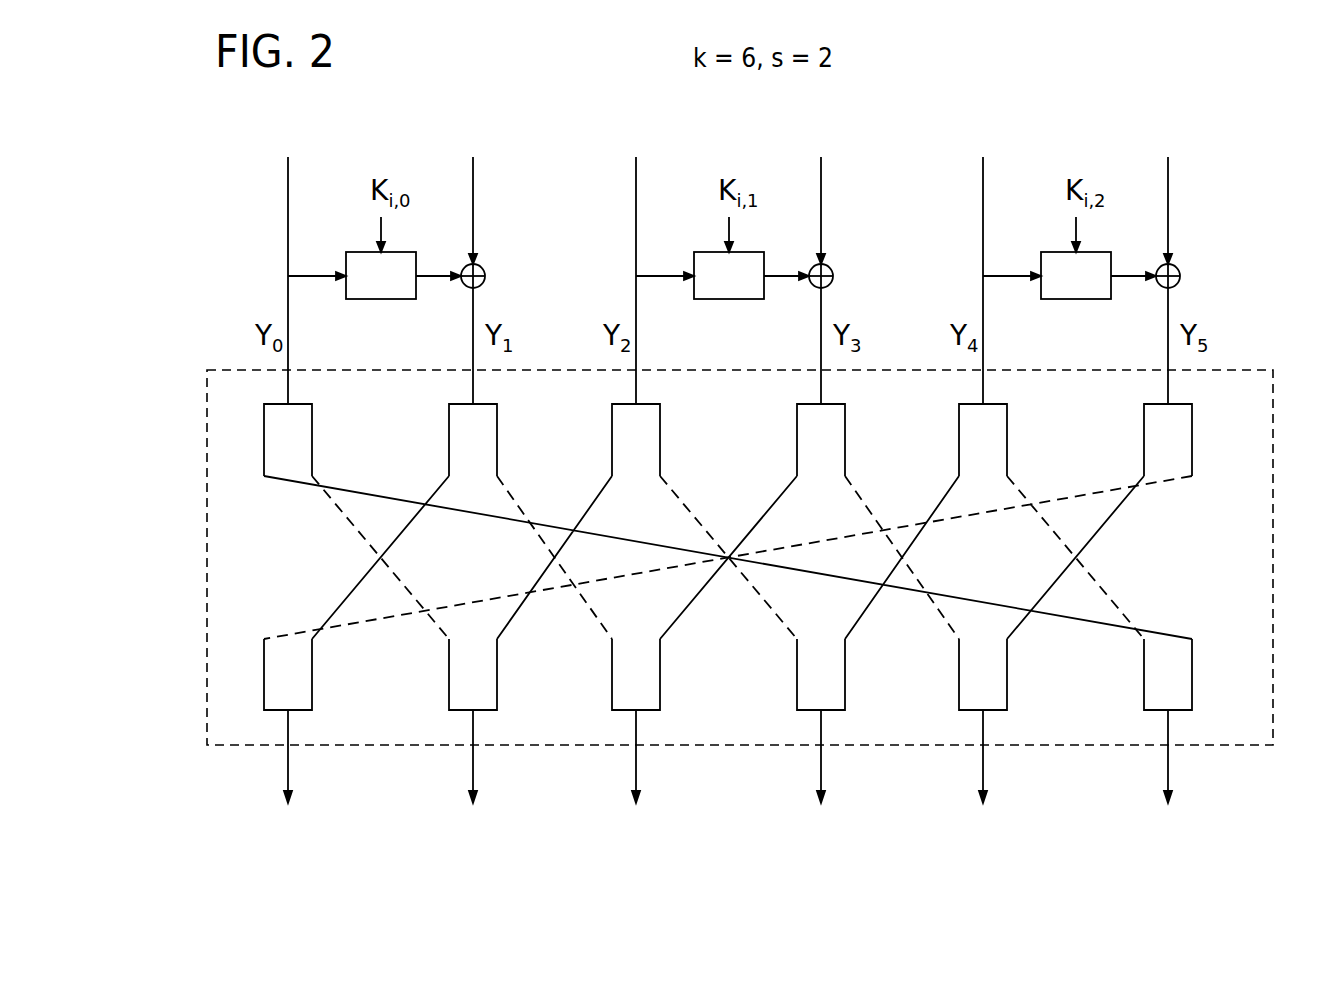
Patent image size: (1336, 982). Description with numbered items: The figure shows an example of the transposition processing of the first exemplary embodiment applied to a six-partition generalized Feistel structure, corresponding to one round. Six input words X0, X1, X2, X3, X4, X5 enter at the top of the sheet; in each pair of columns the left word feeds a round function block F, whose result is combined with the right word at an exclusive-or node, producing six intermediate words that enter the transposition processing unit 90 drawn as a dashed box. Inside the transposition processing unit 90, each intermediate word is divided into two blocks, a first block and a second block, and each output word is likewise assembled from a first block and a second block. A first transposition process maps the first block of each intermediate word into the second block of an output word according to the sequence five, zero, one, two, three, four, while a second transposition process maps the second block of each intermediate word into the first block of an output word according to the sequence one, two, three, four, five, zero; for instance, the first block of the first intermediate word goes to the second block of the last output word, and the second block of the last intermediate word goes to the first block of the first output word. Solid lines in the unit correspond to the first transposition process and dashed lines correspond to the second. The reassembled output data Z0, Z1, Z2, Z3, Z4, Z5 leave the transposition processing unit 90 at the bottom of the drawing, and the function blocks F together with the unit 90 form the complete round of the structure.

The transposition processing unit 90 is at (1062, 743).
The round function (F function) unit F is at (734, 258).
The input data block X0 is at (292, 256).
The input data block X1 is at (478, 256).
The input data block X2 is at (640, 256).
The input data block X3 is at (825, 256).
The input data block X4 is at (987, 256).
The input data block X5 is at (1172, 256).
The output data Z0 is at (273, 756).
The output data Z1 is at (492, 756).
The output data Z2 is at (621, 756).
The output data Z3 is at (840, 756).
The output data Z4 is at (969, 756).
The output data Z5 is at (1187, 756).